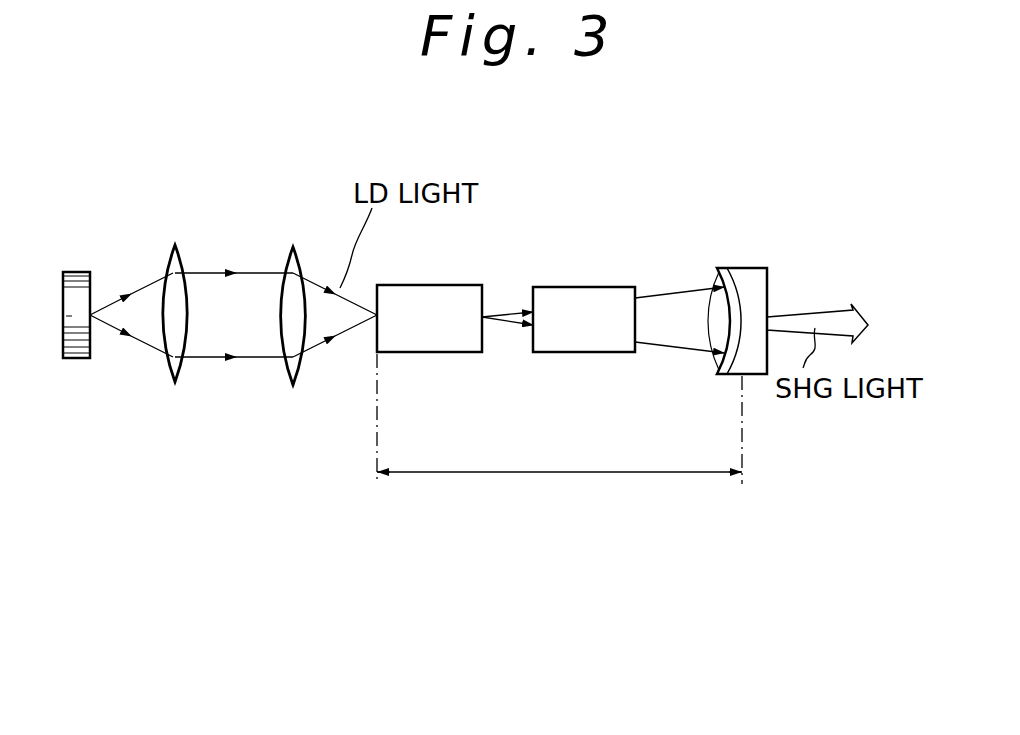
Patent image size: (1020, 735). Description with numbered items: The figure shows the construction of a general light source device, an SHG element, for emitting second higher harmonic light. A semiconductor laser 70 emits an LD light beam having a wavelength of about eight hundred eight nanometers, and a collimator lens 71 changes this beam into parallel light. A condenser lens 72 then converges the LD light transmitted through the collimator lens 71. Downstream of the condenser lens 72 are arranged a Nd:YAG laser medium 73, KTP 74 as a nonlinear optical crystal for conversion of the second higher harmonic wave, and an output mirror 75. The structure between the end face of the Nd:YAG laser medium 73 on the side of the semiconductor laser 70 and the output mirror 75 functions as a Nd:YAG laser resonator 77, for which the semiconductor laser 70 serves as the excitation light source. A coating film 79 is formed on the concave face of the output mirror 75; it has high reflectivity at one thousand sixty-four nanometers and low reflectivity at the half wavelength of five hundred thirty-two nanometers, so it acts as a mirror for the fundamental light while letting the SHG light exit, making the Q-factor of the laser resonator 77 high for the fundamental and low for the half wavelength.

The semiconductor laser 70 is at (81, 272).
The collimator lens 71 is at (177, 260).
The condenser lens 72 is at (285, 265).
The Nd:YAG laser medium 73 is at (448, 293).
The KTP 74 is at (606, 293).
The output mirror 75 is at (749, 268).
The Nd:YAG laser resonator 77 is at (559, 419).
The coating film 79 is at (722, 373).